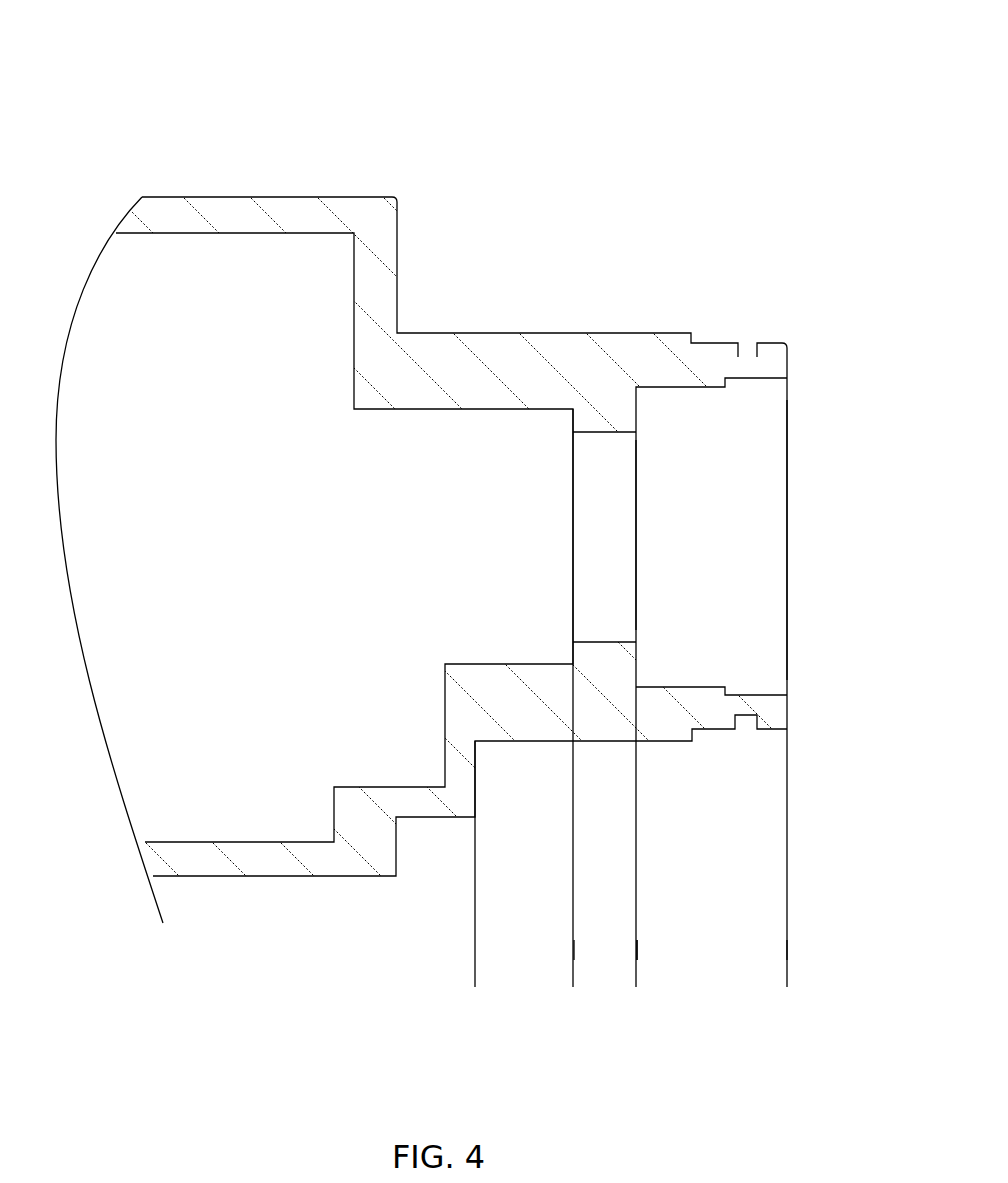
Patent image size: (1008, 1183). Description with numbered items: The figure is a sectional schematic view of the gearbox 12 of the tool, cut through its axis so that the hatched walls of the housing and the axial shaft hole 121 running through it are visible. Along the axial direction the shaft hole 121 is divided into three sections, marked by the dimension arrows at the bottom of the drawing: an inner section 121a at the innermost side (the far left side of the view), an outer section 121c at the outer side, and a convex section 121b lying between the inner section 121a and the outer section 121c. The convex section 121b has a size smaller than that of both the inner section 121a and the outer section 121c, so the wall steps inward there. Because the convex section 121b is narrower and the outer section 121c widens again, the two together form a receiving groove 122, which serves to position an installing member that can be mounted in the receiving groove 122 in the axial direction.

The gearbox 12 is at (357, 212).
The shaft hole 121 is at (600, 535).
The receiving groove 122 is at (712, 542).
The inner section 121a is at (574, 949).
The convex section 121b is at (637, 949).
The outer section 121c is at (787, 949).